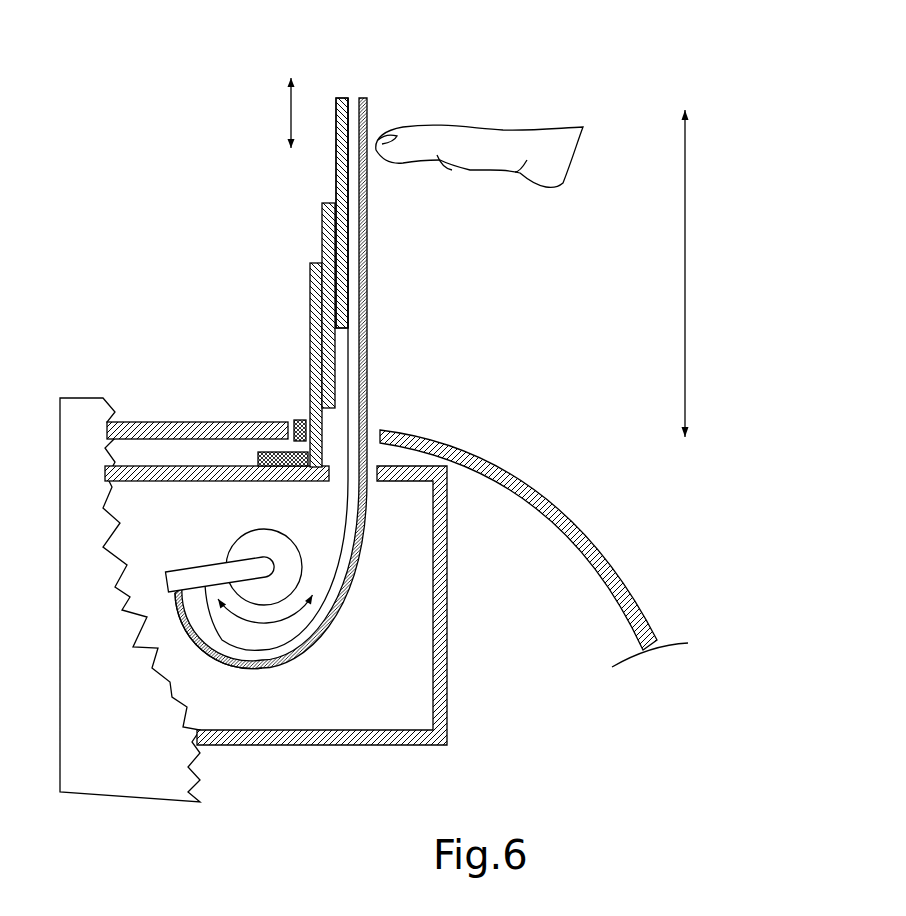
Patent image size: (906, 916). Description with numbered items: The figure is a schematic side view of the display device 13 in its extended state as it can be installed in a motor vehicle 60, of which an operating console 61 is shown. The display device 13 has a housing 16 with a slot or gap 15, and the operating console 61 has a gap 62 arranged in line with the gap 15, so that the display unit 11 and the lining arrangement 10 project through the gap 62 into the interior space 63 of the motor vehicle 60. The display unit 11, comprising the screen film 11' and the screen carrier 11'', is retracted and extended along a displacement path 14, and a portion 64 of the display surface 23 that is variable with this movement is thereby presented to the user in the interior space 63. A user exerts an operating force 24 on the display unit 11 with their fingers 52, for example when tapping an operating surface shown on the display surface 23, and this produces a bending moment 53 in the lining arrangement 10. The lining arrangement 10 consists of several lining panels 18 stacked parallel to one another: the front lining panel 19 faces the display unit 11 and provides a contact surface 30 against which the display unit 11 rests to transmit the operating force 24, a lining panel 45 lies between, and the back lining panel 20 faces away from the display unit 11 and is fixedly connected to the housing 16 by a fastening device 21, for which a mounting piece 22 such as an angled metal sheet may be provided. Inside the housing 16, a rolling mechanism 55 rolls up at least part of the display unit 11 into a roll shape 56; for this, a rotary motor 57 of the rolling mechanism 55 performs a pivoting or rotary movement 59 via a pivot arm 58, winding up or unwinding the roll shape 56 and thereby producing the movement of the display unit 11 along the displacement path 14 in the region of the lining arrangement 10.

The lining arrangement 10 is at (295, 287).
The display unit 11 is at (291, 336).
The screen film 11' is at (387, 67).
The screen carrier 11'' is at (335, 52).
The display device 13 is at (410, 357).
The displacement path 14 is at (288, 102).
The gap 15 is at (335, 468).
The housing 16 is at (168, 472).
The lining panels 18 is at (277, 251).
The lining panel 19 is at (333, 107).
The lining panel 20 is at (310, 337).
The fastening device 21 is at (290, 425).
The mounting piece 22 is at (257, 458).
The display surface 23 is at (369, 262).
The operating force 24 is at (398, 145).
The contact surface 30 is at (350, 206).
The lining panel 45 is at (322, 232).
The fingers 52 is at (503, 128).
The bending moment 53 is at (273, 197).
The rolling mechanism 55 is at (208, 553).
The roll shape 56 is at (333, 630).
The rotary motor 57 is at (287, 529).
The pivot arm 58 is at (187, 565).
The rotary movement 59 is at (253, 622).
The motor vehicle 60 is at (582, 358).
The operating console 61 is at (560, 512).
The gap 62 is at (382, 422).
The interior space 63 is at (538, 277).
The portion 64 is at (685, 223).